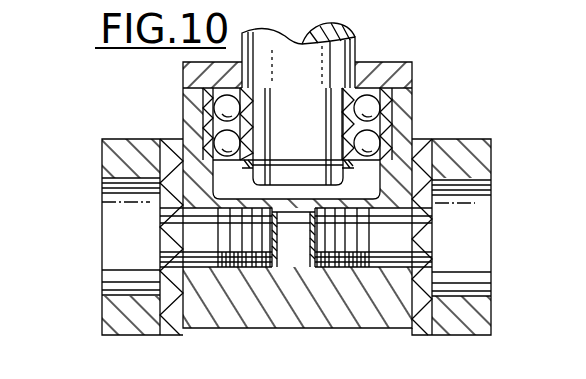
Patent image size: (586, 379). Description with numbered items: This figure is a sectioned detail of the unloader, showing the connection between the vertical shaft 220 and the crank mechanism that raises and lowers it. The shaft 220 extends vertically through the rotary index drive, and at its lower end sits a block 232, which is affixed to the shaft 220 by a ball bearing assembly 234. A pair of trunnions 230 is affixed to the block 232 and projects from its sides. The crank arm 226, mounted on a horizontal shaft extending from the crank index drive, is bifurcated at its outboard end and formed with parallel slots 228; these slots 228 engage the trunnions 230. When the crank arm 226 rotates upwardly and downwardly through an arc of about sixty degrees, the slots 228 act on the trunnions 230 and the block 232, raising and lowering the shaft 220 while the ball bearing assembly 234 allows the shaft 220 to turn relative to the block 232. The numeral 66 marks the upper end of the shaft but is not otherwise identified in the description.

The shaft end 66 is at (332, 22).
The shaft 220 is at (345, 48).
The crank arm 226 is at (110, 153).
The slots 228 is at (123, 180).
The trunnions 230 is at (113, 228).
The block 232 is at (330, 323).
The ball bearing assembly 234 is at (384, 121).